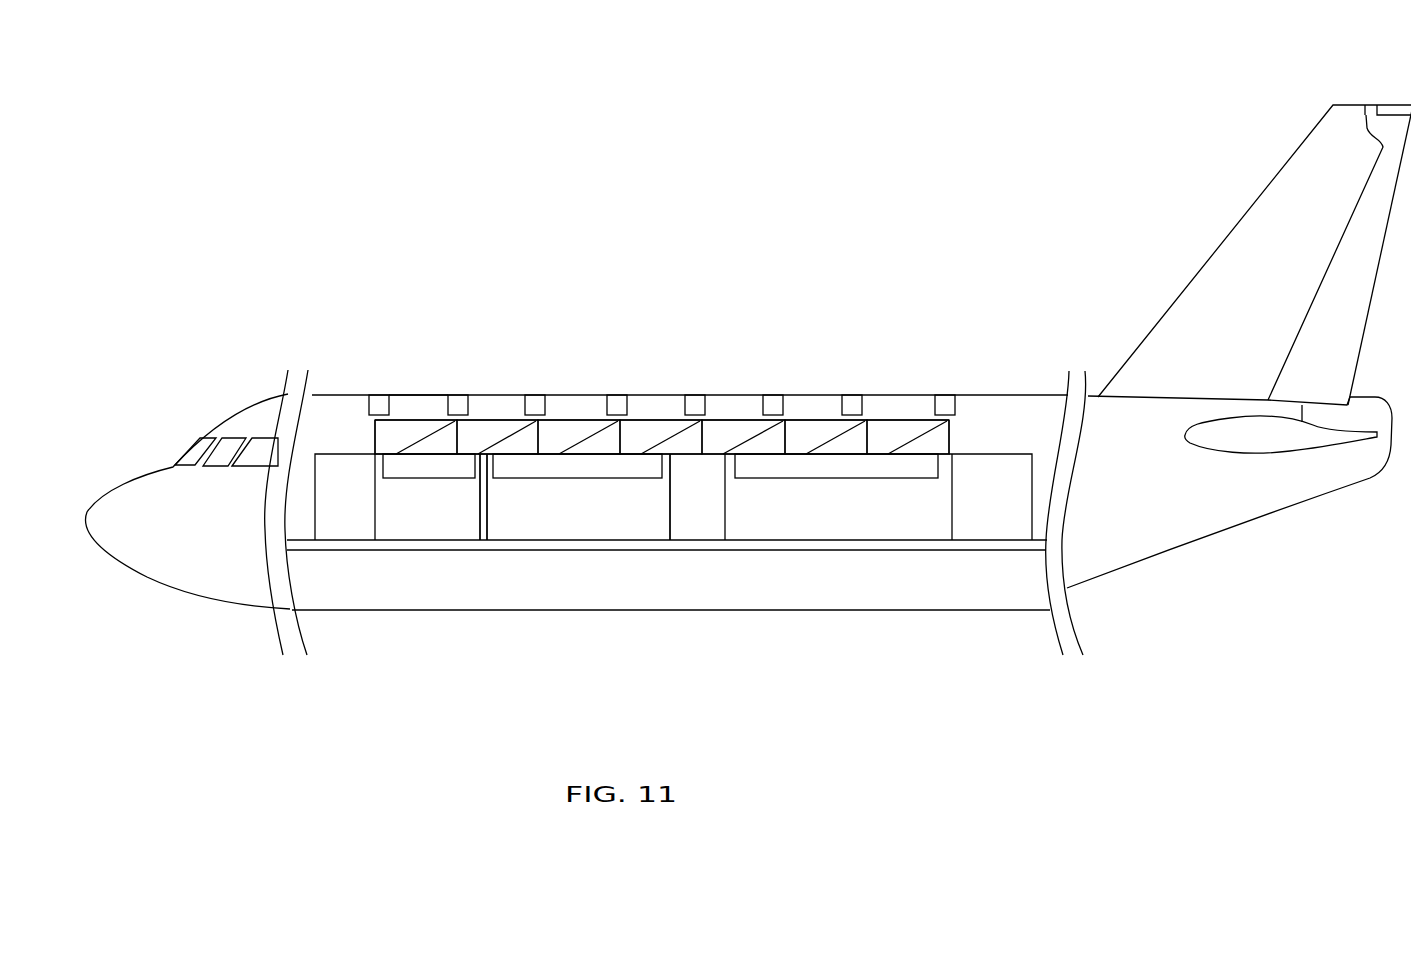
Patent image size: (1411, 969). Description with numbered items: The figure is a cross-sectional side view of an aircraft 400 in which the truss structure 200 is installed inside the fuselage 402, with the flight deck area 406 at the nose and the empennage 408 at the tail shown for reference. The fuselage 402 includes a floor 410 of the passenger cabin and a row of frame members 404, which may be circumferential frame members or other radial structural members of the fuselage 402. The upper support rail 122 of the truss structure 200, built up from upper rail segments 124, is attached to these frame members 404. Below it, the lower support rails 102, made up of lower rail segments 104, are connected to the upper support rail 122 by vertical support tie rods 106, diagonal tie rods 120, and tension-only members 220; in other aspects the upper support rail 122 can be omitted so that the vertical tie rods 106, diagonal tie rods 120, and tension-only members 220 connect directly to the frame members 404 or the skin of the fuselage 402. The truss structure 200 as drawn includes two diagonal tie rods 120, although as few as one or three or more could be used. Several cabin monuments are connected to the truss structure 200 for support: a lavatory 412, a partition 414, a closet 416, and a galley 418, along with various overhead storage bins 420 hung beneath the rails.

The aircraft 400 is at (739, 237).
The fuselage 402 is at (1023, 393).
The frame members 404 is at (380, 394).
The flight deck area 406 is at (237, 399).
The empennage 408 is at (1189, 223).
The floor 410 is at (634, 552).
The lavatory 412 is at (343, 523).
The partition 414 is at (483, 540).
The closet 416 is at (703, 523).
The galley 418 is at (991, 523).
The lower support rails 102 is at (403, 471).
The lower rail segments 104 is at (506, 458).
The vertical tie rods 106 is at (374, 447).
The diagonal tie rods 120 is at (835, 438).
The upper support rail 122 is at (421, 407).
The upper rail segments 124 is at (409, 418).
The truss structure 200 is at (364, 439).
The tension-only members 220 is at (437, 438).
The overhead storage bins 420 is at (461, 468).